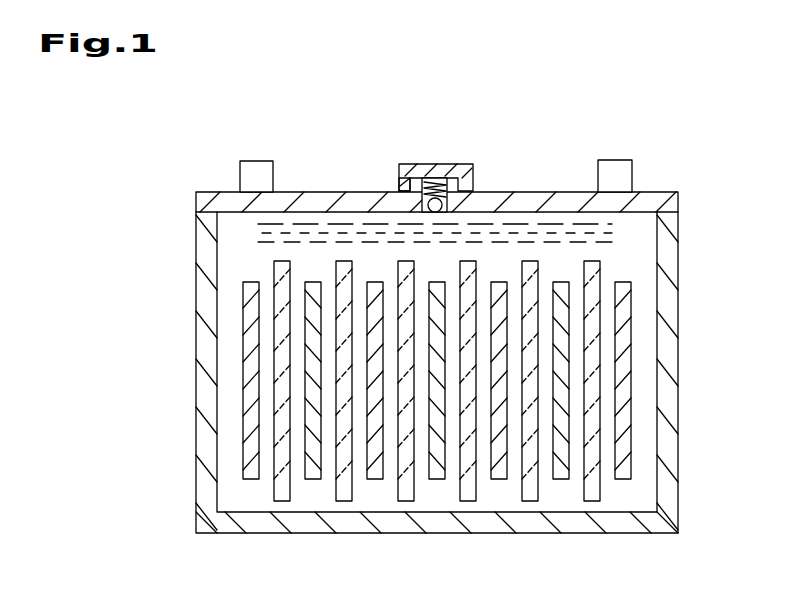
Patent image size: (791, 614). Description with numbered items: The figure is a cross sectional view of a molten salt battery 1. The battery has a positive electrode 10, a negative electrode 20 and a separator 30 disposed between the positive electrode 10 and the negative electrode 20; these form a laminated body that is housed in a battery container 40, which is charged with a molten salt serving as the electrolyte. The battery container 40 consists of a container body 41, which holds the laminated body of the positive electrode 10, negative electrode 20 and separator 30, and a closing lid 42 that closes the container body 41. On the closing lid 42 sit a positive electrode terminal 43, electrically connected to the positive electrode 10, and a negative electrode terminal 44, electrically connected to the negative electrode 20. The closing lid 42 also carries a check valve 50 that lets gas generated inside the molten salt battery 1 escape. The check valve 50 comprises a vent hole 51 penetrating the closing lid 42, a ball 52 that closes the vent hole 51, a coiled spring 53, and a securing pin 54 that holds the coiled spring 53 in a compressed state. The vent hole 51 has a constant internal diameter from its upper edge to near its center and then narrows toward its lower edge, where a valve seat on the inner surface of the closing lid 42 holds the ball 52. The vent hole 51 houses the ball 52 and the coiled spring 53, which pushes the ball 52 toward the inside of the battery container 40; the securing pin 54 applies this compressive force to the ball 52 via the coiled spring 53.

The molten salt battery 1 is at (139, 159).
The positive electrode 10 is at (252, 479).
The negative electrode 20 is at (314, 479).
The separator 30 is at (280, 501).
The battery container 40 is at (123, 190).
The container body 41 is at (196, 280).
The closing lid 42 is at (196, 203).
The positive electrode terminal 43 is at (257, 161).
The negative electrode terminal 44 is at (615, 160).
The check valve 50 is at (502, 119).
The vent hole 51 is at (460, 190).
The ball 52 is at (435, 213).
The coiled spring 53 is at (410, 190).
The securing pin 54 is at (432, 164).